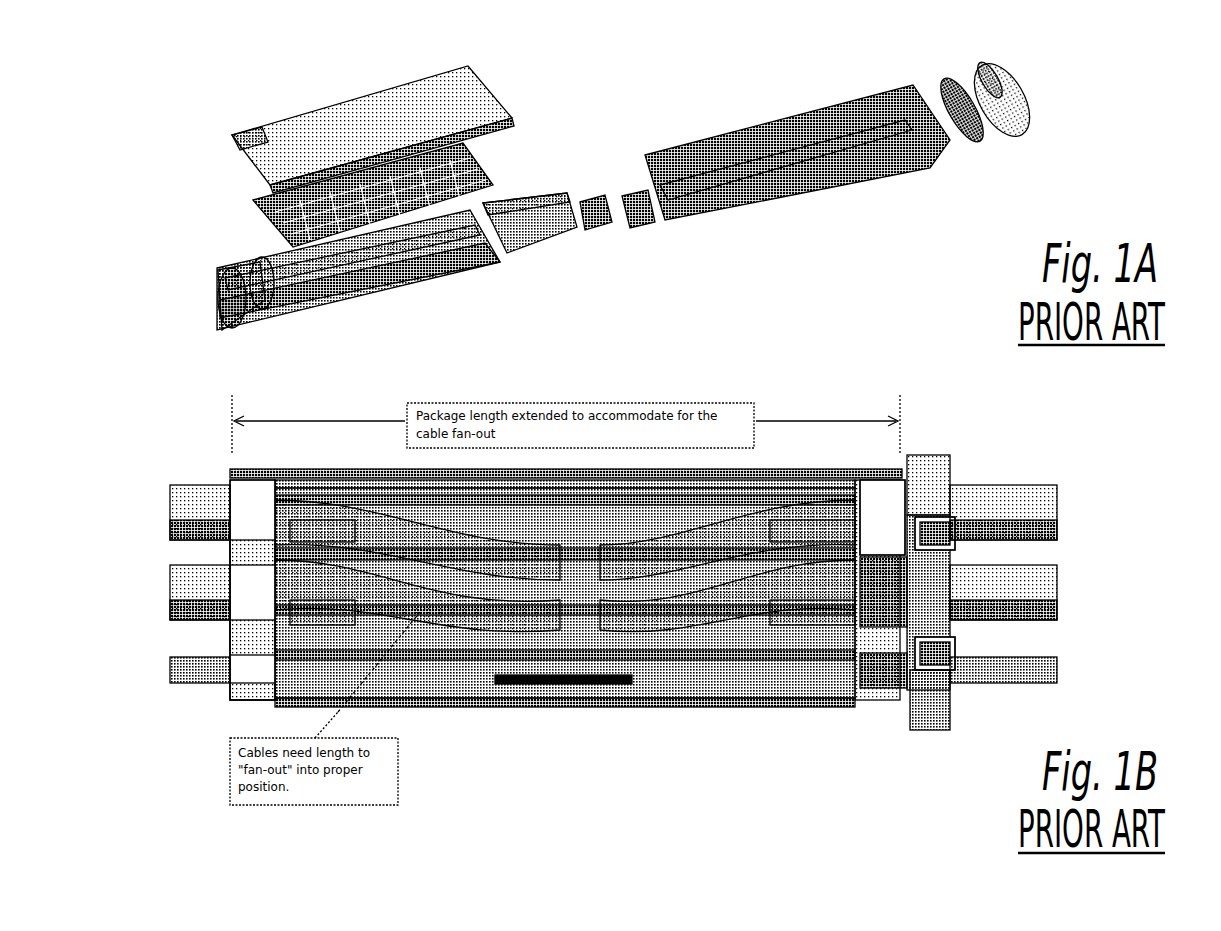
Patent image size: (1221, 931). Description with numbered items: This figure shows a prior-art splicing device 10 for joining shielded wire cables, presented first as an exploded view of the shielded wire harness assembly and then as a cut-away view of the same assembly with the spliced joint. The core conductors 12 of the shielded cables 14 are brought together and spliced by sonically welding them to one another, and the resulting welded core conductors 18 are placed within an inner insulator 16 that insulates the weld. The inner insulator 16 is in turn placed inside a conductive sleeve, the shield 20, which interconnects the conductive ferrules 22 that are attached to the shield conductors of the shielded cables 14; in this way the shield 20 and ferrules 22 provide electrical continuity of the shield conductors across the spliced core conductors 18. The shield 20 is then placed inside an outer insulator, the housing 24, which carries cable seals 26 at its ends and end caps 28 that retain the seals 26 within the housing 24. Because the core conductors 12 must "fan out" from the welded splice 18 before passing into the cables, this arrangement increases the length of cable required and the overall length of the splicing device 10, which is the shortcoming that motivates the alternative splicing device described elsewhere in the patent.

In FIG. 1A, the splicing device 10 is at (611, 78).
In FIG. 1B, the splicing device 10 is at (625, 758).
In FIG. 1A, the core conductors 12 is at (422, 293).
In FIG. 1B, the core conductors 12 is at (603, 580).
In FIG. 1A, the shielded cables 14 is at (540, 265).
In FIG. 1B, the shielded cables 14 is at (1015, 663).
In FIG. 1A, the inner insulator 16 is at (290, 222).
In FIG. 1B, the inner insulator 16 is at (593, 640).
In FIG. 1A, the welded core conductors 18 is at (378, 260).
In FIG. 1B, the welded core conductors 18 is at (555, 557).
In FIG. 1A, the shield 20 is at (313, 130).
In FIG. 1B, the shield 20 is at (873, 500).
In FIG. 1A, the conductive ferrules 22 is at (633, 259).
In FIG. 1B, the conductive ferrules 22 is at (243, 517).
In FIG. 1A, the housing 24 is at (903, 143).
In FIG. 1A, the cable seals 26 is at (973, 140).
In FIG. 1B, the cable seals 26 is at (928, 533).
In FIG. 1A, the end caps 28 is at (1017, 110).
In FIG. 1B, the end caps 28 is at (937, 700).